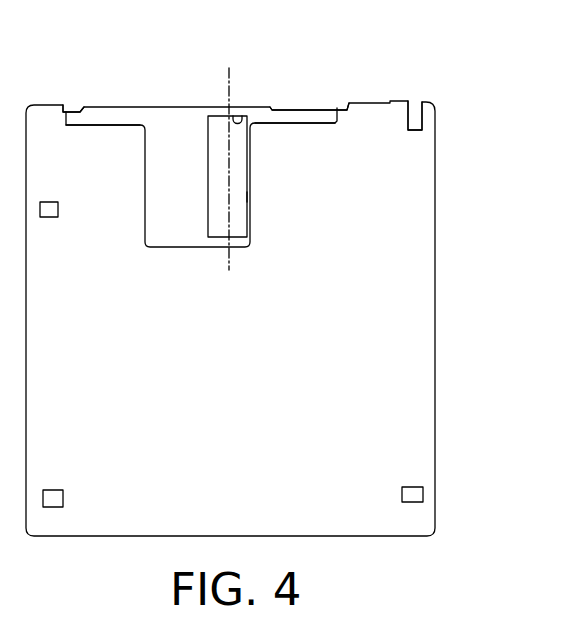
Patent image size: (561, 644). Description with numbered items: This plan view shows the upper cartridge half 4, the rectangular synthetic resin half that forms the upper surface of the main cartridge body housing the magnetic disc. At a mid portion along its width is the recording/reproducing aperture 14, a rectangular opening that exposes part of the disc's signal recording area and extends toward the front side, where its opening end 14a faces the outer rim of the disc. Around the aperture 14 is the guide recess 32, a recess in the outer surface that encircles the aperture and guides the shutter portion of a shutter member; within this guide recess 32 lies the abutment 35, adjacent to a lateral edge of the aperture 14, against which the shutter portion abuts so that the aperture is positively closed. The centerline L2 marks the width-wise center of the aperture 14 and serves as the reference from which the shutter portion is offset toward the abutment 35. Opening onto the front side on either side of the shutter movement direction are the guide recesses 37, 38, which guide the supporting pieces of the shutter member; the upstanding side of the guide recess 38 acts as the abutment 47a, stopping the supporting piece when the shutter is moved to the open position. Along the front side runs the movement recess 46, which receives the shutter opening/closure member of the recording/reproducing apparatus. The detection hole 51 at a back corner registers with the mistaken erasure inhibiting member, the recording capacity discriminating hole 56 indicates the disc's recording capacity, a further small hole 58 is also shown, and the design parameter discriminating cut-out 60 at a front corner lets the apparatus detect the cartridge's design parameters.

The upper cartridge half 4 is at (419, 348).
The recording/reproducing aperture 14 is at (208, 158).
The opening end 14a is at (241, 109).
The guide recess 32 is at (178, 232).
The abutment 35 is at (248, 197).
The guide recess 37 is at (300, 121).
The guide recess 38 is at (88, 127).
The movement recess 46 is at (305, 108).
The abutment 47a is at (72, 109).
The detection hole 51 is at (402, 494).
The recording capacity discriminating hole 56 is at (48, 217).
The detection hole 58 is at (46, 494).
The design parameter discriminating cut-out 60 is at (411, 107).
The centerline of the apertures L2 is at (229, 86).